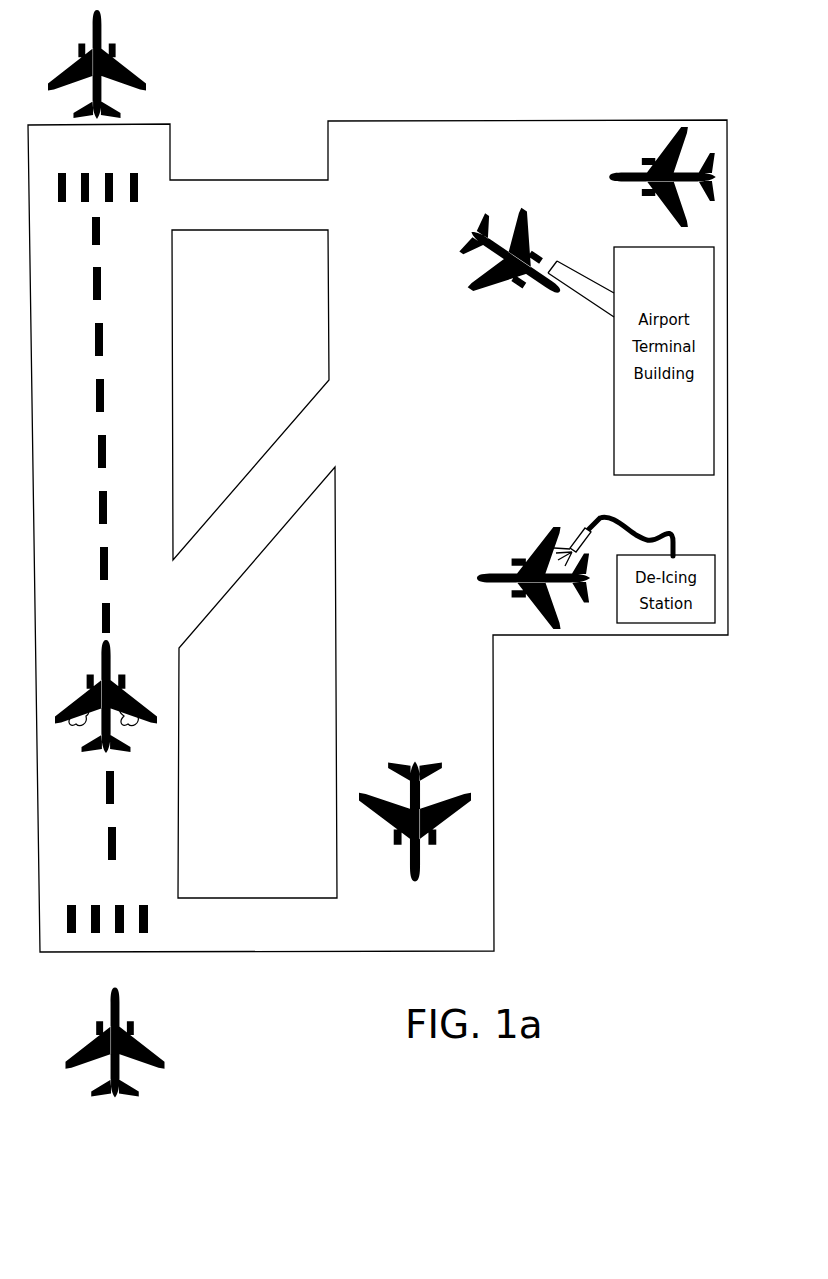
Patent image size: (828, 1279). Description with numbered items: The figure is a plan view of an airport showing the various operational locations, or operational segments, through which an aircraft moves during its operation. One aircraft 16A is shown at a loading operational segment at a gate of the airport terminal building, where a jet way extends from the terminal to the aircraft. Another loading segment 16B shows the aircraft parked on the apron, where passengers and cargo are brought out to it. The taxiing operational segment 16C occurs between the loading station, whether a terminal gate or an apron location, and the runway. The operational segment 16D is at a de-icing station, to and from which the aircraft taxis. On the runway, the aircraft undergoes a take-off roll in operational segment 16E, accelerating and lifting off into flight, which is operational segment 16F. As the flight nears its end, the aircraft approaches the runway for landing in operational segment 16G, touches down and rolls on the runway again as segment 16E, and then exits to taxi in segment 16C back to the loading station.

The loading operational segment 16A is at (548, 290).
The loading segment 16B is at (613, 184).
The taxiing operational segment 16C is at (408, 866).
The de-icing station operational segment 16D is at (490, 580).
The take-off roll operational segment 16E is at (112, 656).
The in-flight operational segment 16F is at (136, 20).
The landing approach operational segment 16G is at (153, 998).